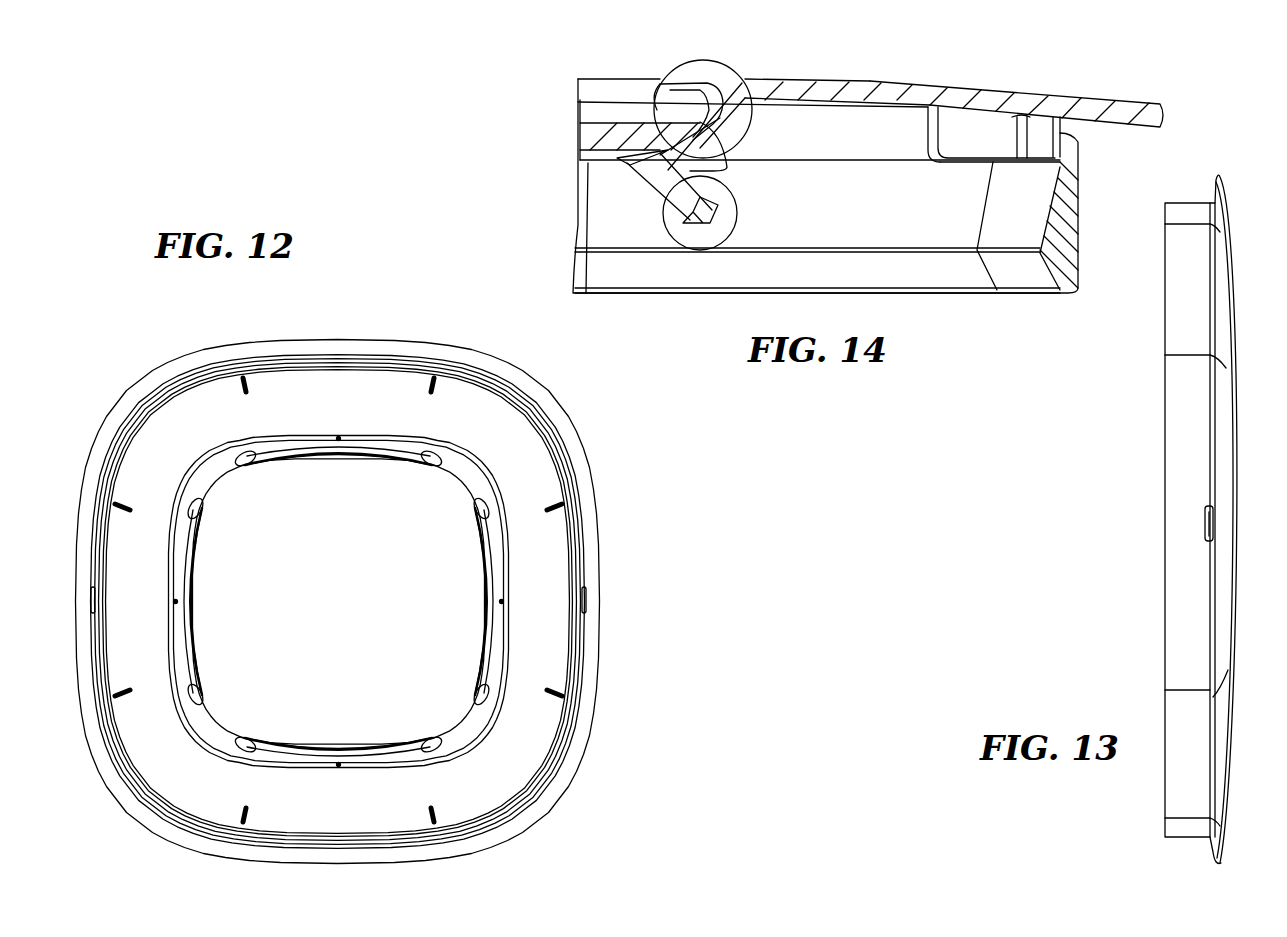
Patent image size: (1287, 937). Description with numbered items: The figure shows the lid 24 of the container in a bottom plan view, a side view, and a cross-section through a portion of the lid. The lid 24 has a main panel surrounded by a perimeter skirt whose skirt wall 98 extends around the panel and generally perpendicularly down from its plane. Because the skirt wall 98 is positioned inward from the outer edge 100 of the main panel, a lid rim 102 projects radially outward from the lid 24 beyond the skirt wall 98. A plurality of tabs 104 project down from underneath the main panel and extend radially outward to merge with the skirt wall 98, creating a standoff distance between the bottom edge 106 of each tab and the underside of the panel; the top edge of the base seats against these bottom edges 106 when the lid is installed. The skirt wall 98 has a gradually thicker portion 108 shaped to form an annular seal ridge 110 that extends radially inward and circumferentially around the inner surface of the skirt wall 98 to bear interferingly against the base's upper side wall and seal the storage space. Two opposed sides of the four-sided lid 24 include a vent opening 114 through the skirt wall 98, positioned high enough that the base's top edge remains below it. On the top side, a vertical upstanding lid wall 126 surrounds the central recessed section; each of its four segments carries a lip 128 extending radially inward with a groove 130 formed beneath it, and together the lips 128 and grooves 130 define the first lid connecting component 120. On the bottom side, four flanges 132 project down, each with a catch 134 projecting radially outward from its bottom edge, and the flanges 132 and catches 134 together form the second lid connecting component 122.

In FIG. 12, the lid 24 is at (648, 513).
In FIG. 13, the lid 24 is at (1128, 443).
In FIG. 14, the lid 24 is at (528, 128).
In FIG. 13, the skirt wall 98 is at (1190, 635).
In FIG. 14, the skirt wall 98 is at (1077, 238).
In FIG. 13, the outer edge 100 is at (1219, 180).
In FIG. 13, the lid rim 102 is at (1211, 851).
In FIG. 12, the tabs 104 is at (245, 384).
In FIG. 14, the tabs 104 is at (987, 137).
In FIG. 14, the bottom edge 106 is at (967, 160).
In FIG. 14, the thicker portion 108 is at (1053, 227).
In FIG. 14, the seal ridge 110 is at (893, 253).
In FIG. 12, the vent opening 114 is at (98, 601).
In FIG. 13, the vent opening 114 is at (1203, 528).
In FIG. 14, the first lid connecting component 120 is at (727, 80).
In FIG. 14, the second lid connecting component 122 is at (670, 237).
In FIG. 14, the lid wall 126 is at (747, 133).
In FIG. 14, the lip 128 is at (693, 130).
In FIG. 14, the groove 130 is at (700, 122).
In FIG. 14, the flange 132 is at (660, 183).
In FIG. 14, the catch 134 is at (735, 205).